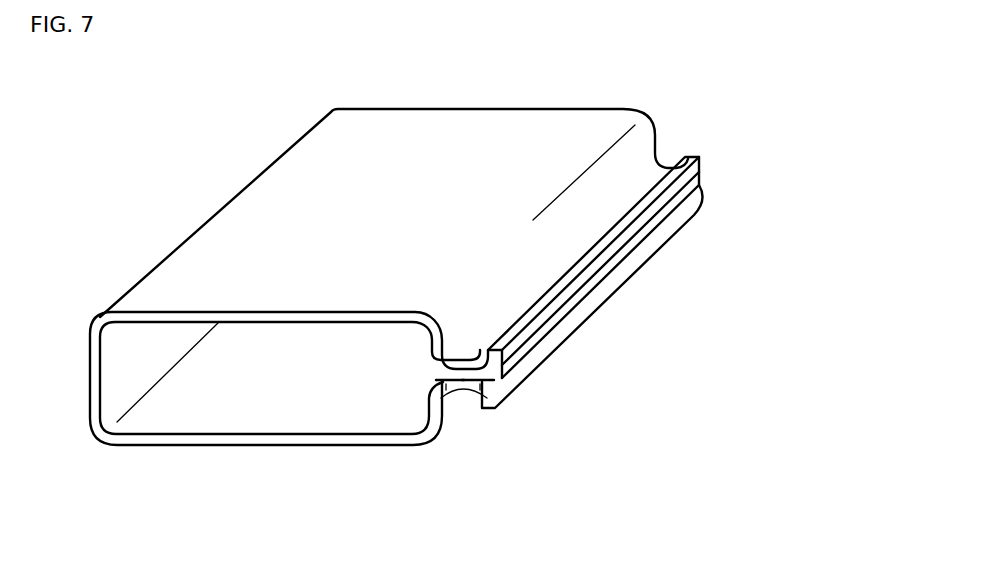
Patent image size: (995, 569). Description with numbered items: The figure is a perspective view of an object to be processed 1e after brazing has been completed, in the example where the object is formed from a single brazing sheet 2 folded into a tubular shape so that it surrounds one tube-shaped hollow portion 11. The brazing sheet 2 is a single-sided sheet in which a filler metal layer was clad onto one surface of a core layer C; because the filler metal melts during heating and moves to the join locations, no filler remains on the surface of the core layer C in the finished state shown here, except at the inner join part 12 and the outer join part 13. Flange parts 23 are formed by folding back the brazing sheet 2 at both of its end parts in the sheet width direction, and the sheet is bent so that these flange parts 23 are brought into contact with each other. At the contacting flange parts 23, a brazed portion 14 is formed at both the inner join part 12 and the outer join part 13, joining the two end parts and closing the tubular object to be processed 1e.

The object to be processed 1e is at (396, 294).
The brazing sheet 2 is at (434, 143).
The core layer C is at (189, 438).
The hollow portion 11 is at (280, 407).
The inner join part 12 is at (443, 381).
The outer join part 13 is at (487, 382).
The brazed portion 14 is at (445, 392).
The flange part 23 is at (465, 389).